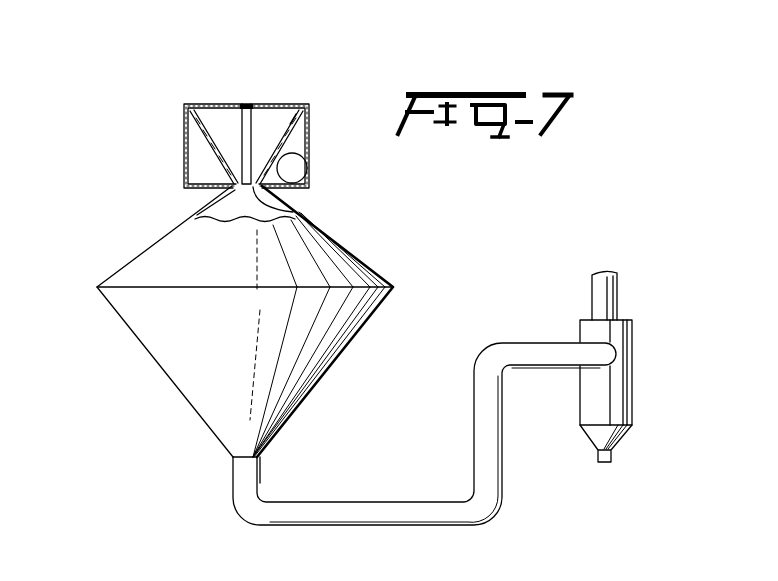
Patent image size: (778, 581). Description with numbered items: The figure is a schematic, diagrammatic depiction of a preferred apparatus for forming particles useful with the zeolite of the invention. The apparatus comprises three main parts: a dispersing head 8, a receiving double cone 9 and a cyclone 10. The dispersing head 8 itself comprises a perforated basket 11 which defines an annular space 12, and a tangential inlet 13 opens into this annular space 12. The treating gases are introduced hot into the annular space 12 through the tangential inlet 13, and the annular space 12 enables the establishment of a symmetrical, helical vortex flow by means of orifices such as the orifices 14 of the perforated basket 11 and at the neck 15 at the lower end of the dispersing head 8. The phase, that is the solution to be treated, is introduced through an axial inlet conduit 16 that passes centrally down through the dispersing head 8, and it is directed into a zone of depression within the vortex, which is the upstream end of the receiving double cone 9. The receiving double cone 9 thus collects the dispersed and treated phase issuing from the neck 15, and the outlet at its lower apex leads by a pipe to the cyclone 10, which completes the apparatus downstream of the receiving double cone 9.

The dispersing head 8 is at (184, 145).
The receiving double cone 9 is at (163, 377).
The cyclone 10 is at (632, 377).
The perforated basket 11 is at (290, 139).
The annular space 12 is at (200, 170).
The tangential inlet 13 is at (297, 168).
The orifices 14 is at (187, 123).
The neck 15 is at (295, 212).
The axial inlet conduit 16 is at (247, 108).